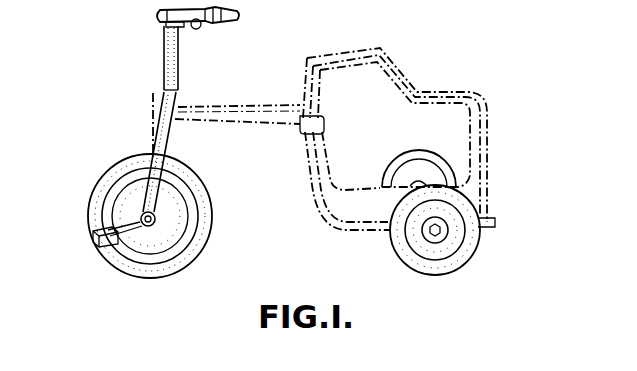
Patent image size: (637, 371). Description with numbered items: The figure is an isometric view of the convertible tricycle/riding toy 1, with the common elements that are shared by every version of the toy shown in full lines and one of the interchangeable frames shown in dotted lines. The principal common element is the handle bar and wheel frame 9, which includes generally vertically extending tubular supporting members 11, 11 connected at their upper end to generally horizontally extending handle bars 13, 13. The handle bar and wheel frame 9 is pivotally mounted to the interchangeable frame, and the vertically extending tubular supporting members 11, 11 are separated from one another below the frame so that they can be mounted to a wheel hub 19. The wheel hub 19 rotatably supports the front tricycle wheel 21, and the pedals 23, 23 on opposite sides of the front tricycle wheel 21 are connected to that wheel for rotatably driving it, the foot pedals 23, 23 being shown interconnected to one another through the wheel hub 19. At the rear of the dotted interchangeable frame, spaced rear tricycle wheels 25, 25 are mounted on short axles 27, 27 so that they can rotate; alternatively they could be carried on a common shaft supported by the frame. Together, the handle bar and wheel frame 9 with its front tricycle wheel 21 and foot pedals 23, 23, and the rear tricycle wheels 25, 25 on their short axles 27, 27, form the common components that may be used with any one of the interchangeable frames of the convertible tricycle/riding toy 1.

The convertible tricycle/riding toy 1 is at (433, 67).
The handle bar and wheel frame 9 is at (152, 73).
The vertically extending tubular supporting members 11 is at (163, 74).
The handle bars 13 is at (228, 13).
The wheel hub 19 is at (155, 220).
The front tricycle wheel 21 is at (207, 238).
The pedals 23 is at (92, 228).
The rear tricycle wheels 25 is at (418, 158).
The short axles 27 is at (440, 233).